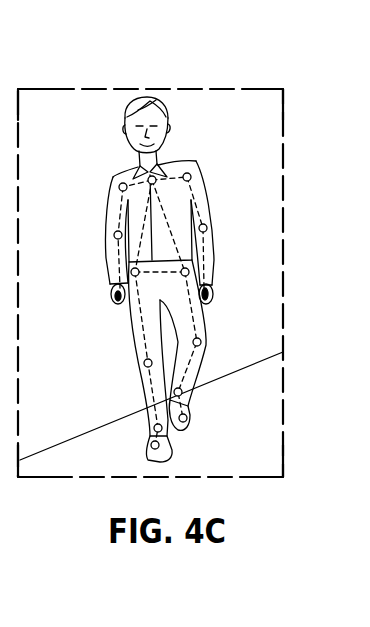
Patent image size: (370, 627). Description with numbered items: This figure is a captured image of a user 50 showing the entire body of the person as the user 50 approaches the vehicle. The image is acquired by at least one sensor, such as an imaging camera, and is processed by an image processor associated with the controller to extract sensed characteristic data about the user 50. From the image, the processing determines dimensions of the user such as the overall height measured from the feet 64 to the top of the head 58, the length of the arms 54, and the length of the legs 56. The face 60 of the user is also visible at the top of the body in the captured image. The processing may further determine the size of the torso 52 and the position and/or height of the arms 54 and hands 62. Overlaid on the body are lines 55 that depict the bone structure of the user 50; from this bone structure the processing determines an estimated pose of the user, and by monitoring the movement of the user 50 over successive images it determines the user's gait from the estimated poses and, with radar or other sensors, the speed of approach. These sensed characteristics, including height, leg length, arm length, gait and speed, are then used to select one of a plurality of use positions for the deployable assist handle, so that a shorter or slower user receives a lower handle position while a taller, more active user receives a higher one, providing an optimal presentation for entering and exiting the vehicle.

The user 50 is at (190, 153).
The torso 52 is at (178, 205).
The arms 54 is at (107, 220).
The lines 55 is at (140, 325).
The legs 56 is at (145, 392).
The head 58 is at (130, 104).
The face 60 is at (158, 110).
The hands 62 is at (112, 302).
The feet 64 is at (168, 458).